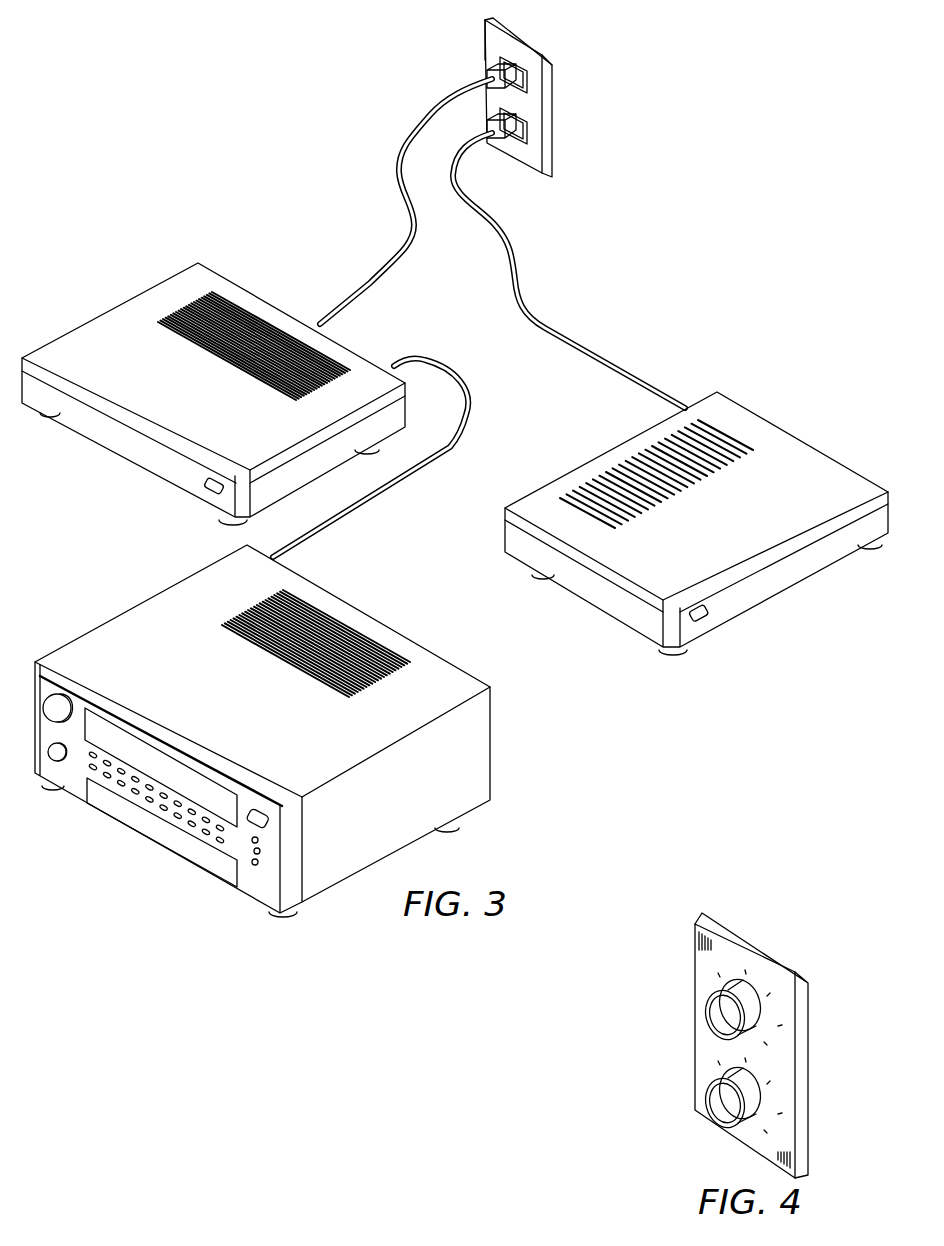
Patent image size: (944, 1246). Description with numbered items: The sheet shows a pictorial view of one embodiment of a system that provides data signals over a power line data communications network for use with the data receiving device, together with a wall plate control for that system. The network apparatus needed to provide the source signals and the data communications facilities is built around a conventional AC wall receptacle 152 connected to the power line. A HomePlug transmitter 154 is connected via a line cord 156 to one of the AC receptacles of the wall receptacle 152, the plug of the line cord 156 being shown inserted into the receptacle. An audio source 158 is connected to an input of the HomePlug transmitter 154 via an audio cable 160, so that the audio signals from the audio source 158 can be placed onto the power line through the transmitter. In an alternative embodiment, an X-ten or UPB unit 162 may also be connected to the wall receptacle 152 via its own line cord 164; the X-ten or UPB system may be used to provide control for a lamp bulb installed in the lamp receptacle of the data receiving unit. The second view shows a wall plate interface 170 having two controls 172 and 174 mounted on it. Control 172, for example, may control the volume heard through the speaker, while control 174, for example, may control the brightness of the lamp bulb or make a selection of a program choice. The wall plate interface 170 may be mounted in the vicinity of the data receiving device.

In FIG. 3, the AC wall receptacle 152 is at (483, 50).
In FIG. 3, the HomePlug transmitter 154 is at (117, 307).
In FIG. 3, the line cord 156 is at (397, 163).
In FIG. 3, the audio source 158 is at (138, 603).
In FIG. 3, the audio cable 160 is at (357, 510).
In FIG. 3, the X-10 or UPB unit 162 is at (792, 433).
In FIG. 3, the line cord 164 is at (517, 263).
In FIG. 4, the wall plate interface 170 is at (773, 949).
In FIG. 4, the control 172 is at (722, 1027).
In FIG. 4, the control 174 is at (722, 1112).